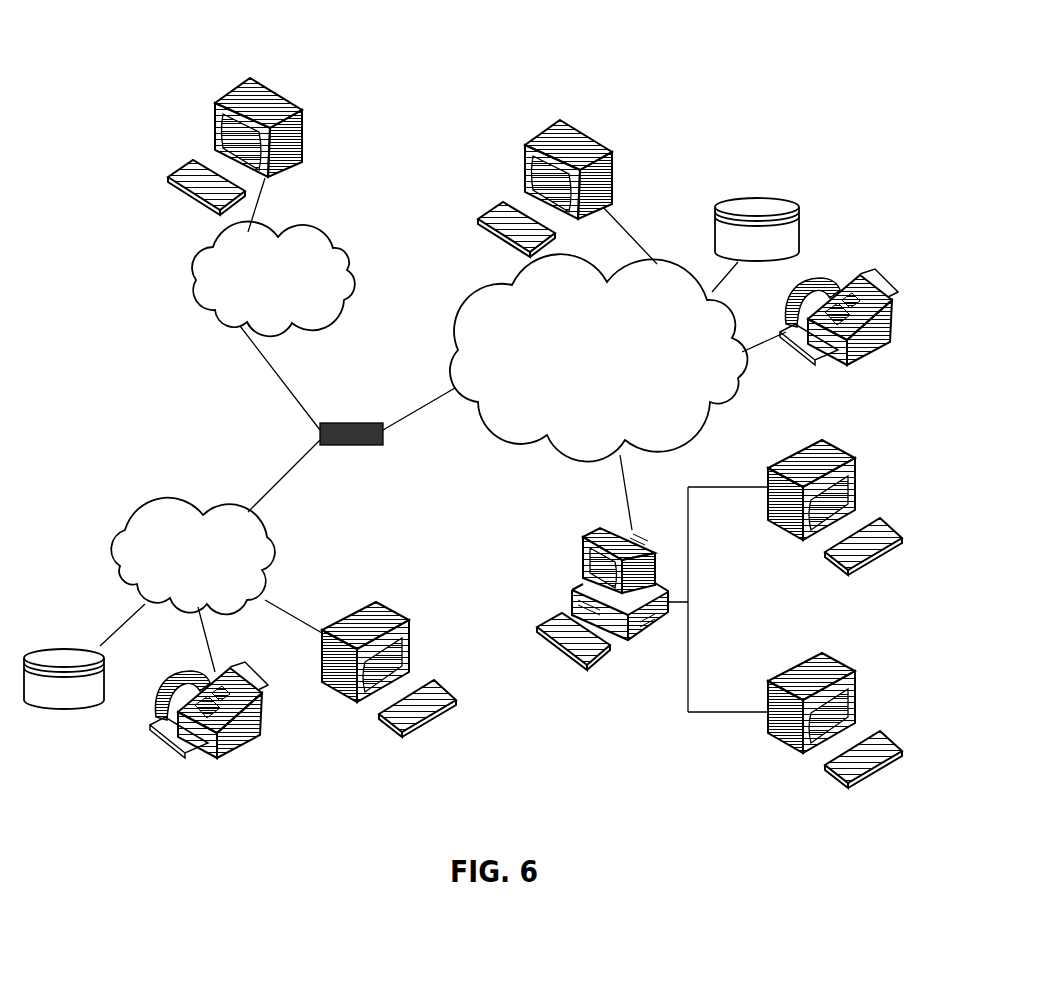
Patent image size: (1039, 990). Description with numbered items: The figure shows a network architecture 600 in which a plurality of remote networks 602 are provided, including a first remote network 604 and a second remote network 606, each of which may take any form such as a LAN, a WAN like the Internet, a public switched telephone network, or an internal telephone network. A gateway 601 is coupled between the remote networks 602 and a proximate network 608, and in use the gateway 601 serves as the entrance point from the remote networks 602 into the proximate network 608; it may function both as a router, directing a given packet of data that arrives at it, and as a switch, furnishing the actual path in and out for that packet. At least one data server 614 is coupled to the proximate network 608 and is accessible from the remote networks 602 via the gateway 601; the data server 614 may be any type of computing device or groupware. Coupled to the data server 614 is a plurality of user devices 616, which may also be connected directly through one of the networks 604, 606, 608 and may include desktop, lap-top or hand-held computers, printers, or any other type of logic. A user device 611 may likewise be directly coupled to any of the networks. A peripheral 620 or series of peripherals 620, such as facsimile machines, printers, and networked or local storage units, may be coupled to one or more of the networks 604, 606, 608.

The architecture 600 is at (150, 63).
The gateway 601 is at (335, 423).
The remote networks 602 is at (178, 340).
The first remote network 604 is at (122, 531).
The second remote network 606 is at (345, 256).
The proximate network 608 is at (700, 428).
The user device 611 is at (612, 152).
The data server 614 is at (583, 556).
The user devices 616 is at (302, 116).
The peripheral 620 is at (800, 207).